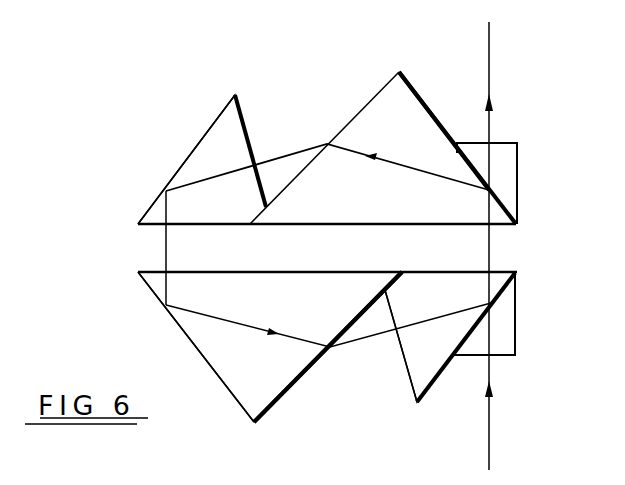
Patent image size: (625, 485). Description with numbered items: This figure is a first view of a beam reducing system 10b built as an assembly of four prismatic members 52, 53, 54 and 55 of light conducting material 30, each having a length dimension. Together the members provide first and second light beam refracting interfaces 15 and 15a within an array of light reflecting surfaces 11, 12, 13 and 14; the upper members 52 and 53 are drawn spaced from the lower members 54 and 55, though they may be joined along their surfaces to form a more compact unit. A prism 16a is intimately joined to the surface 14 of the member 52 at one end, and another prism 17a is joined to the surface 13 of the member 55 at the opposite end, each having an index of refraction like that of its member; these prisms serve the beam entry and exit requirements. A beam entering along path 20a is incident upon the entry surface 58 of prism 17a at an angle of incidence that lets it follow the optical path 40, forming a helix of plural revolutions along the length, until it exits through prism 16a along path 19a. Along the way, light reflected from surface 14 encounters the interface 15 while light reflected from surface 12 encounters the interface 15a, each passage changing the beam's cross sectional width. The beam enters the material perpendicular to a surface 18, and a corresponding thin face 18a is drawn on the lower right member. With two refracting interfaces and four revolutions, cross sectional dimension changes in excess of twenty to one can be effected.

The system 10b is at (171, 122).
The light reflecting surface 11 is at (151, 207).
The light reflecting surface 12 is at (186, 333).
The light reflecting surface 13 is at (437, 375).
The light reflecting surface 14 is at (445, 127).
The light beam refracting interface 15 is at (376, 90).
The light beam refracting interface 15a is at (273, 403).
The prism 16a is at (512, 175).
The prism 17a is at (512, 332).
The surface 18 is at (242, 108).
The transmitting surface 18a is at (402, 368).
The path 19a is at (490, 65).
The path 20a is at (490, 437).
The light conducting material 30 is at (333, 209).
The optical path 40 is at (405, 163).
The prismatic member 52 is at (412, 98).
The prismatic member 53 is at (216, 133).
The prismatic member 54 is at (214, 370).
The prismatic member 55 is at (495, 280).
The entry surface 58 is at (500, 357).